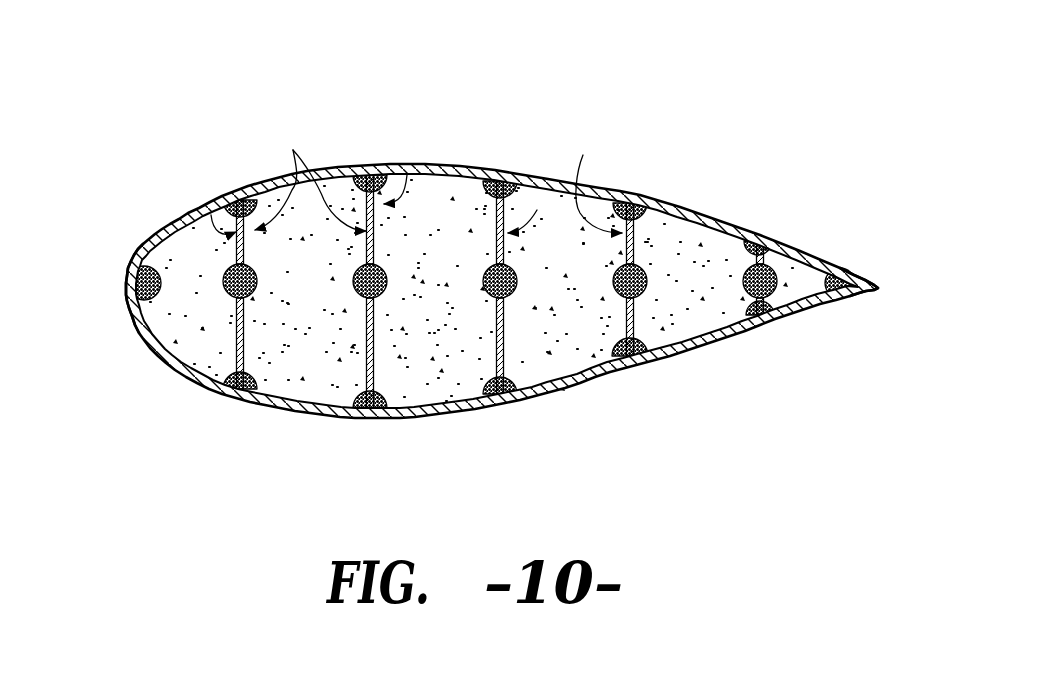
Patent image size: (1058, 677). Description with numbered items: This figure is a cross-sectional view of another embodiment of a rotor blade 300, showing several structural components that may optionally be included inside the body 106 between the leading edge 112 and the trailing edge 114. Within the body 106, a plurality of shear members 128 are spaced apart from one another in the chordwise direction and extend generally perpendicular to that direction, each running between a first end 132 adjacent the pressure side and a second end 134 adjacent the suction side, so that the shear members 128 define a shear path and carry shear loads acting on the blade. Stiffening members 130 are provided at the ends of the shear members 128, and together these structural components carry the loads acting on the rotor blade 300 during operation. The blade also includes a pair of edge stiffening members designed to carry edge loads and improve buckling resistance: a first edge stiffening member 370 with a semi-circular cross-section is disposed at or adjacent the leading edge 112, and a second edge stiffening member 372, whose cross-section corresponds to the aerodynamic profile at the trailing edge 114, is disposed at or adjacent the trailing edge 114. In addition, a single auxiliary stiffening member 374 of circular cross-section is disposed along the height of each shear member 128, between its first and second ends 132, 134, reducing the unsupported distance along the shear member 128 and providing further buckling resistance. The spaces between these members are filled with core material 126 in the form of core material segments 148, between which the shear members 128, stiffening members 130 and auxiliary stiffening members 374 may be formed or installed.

The rotor blade 300 is at (665, 130).
The body 106 is at (443, 168).
The leading edge 112 is at (122, 280).
The trailing edge 114 is at (878, 291).
The core material 126 is at (183, 312).
The core material segments 148 is at (671, 226).
The shear members 128 is at (502, 267).
The stiffening members 130 is at (249, 186).
The first end 132 is at (252, 358).
The second end 134 is at (211, 215).
The first edge stiffening member 370 is at (163, 232).
The second edge stiffening member 372 is at (813, 266).
The auxiliary stiffening member 374 is at (203, 313).